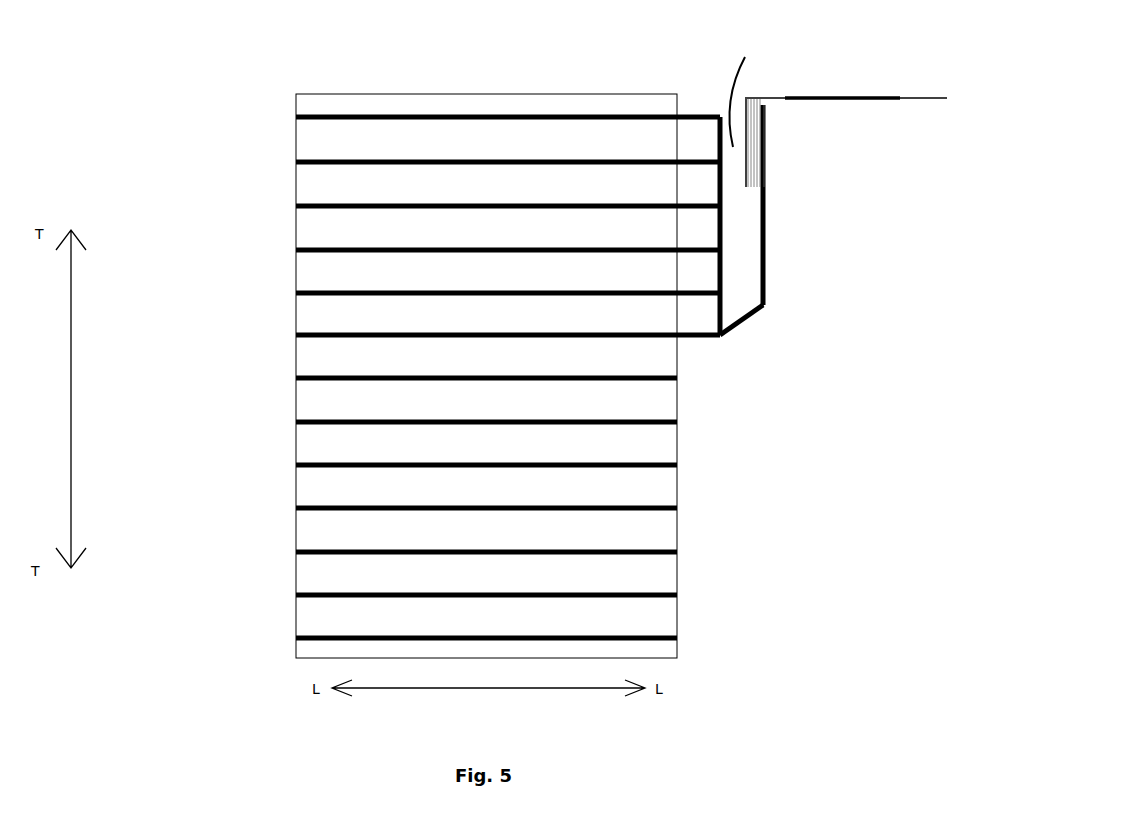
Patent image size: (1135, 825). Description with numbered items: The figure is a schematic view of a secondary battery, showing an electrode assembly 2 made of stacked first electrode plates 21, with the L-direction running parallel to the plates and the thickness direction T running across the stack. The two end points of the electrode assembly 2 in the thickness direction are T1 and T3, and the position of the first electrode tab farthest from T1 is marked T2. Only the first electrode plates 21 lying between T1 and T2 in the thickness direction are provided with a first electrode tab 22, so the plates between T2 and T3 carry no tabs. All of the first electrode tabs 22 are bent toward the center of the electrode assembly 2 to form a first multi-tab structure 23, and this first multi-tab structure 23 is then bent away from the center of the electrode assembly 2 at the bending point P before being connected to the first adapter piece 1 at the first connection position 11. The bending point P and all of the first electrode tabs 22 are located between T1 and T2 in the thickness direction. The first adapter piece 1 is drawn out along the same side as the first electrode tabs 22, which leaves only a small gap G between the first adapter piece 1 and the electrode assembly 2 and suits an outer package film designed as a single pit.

The first adapter piece 1 is at (770, 102).
The first connection position 11 is at (767, 165).
The electrode assembly 2 is at (296, 273).
The first electrode plate 21 is at (343, 139).
The first electrode tab 22 is at (693, 335).
The first multi-tab structure 23 is at (742, 323).
The bending point P is at (768, 307).
The gap G is at (741, 92).
The first end point in thickness direction T1 is at (699, 90).
The position of first electrode tab farthest from T1 T2 is at (742, 348).
The second end point in thickness direction T3 is at (700, 662).